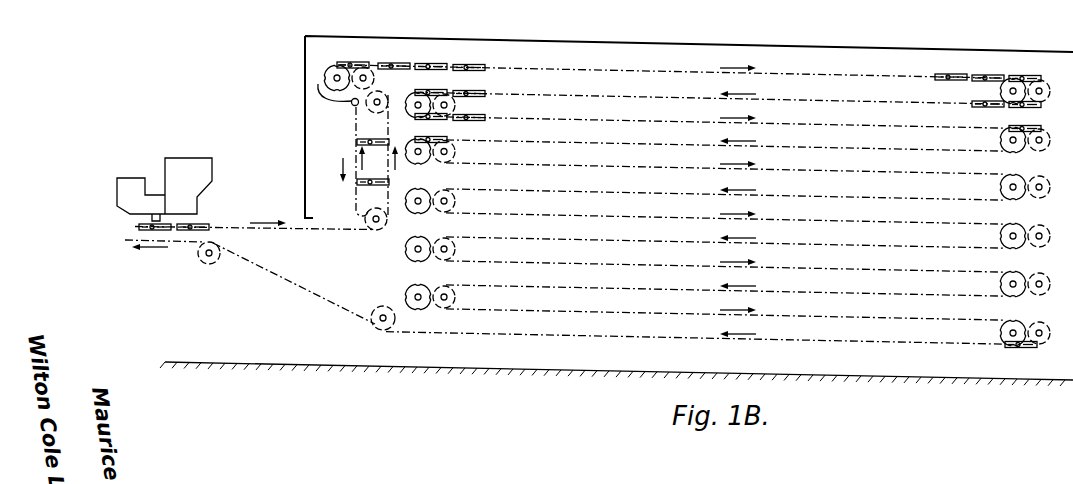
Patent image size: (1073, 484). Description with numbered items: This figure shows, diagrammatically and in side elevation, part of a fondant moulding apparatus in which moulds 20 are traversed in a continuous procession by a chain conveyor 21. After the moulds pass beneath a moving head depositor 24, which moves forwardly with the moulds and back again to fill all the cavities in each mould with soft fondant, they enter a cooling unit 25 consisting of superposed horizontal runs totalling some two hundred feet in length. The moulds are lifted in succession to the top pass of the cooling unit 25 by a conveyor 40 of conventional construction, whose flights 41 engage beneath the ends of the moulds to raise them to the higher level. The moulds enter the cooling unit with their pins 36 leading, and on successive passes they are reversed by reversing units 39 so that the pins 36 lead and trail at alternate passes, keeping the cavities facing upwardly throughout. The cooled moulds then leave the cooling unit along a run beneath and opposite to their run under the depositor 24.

The moulds 20 is at (407, 61).
The chain conveyor 21 is at (644, 70).
The moving head depositor 24 is at (207, 168).
The cooling unit 25 is at (858, 52).
The pins 36 is at (488, 91).
The reversing units 39 is at (405, 100).
The conveyor 40 is at (352, 129).
The flights 41 is at (350, 143).